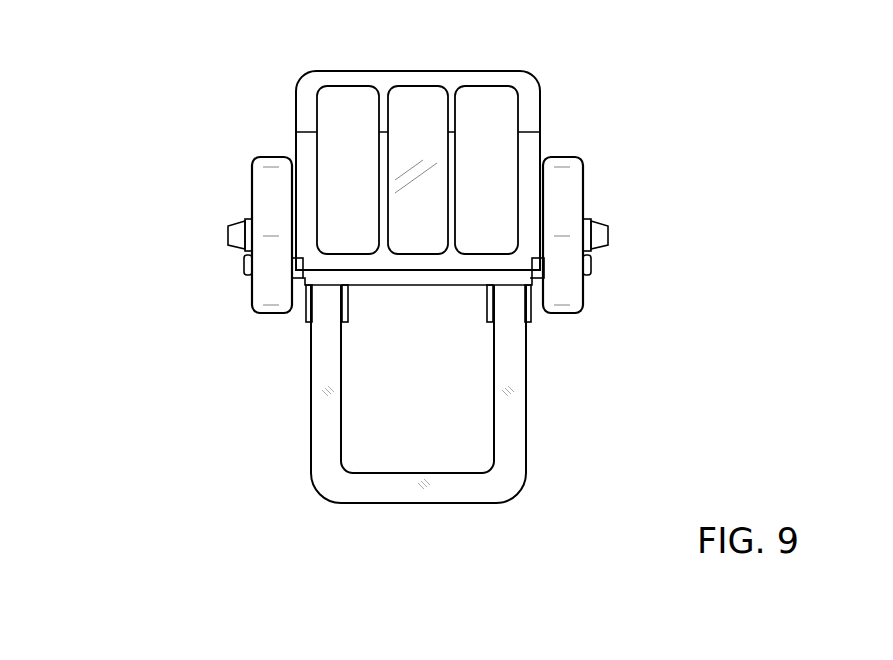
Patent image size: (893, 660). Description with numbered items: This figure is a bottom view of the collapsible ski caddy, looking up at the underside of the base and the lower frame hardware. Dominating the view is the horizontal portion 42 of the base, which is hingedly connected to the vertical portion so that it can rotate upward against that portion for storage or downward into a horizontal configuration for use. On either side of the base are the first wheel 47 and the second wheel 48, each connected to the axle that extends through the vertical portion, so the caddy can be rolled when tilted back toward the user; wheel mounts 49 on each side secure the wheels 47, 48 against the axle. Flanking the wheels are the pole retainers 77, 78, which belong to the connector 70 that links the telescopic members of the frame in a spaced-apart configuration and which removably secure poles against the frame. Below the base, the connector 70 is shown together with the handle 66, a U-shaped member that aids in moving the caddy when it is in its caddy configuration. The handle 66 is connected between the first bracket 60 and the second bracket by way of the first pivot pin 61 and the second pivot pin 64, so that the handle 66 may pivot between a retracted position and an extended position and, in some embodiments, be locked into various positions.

The horizontal portion 42 is at (412, 120).
The first wheel 47 is at (250, 295).
The second wheel 48 is at (585, 290).
The wheel mounts 49 is at (228, 232).
The first bracket 60 is at (310, 322).
The first pivot pin 61 is at (307, 292).
The second pivot pin 64 is at (527, 300).
The handle 66 is at (404, 503).
The connector 70 is at (433, 288).
The pole retainer 77 is at (243, 262).
The pole retainer 78 is at (593, 262).